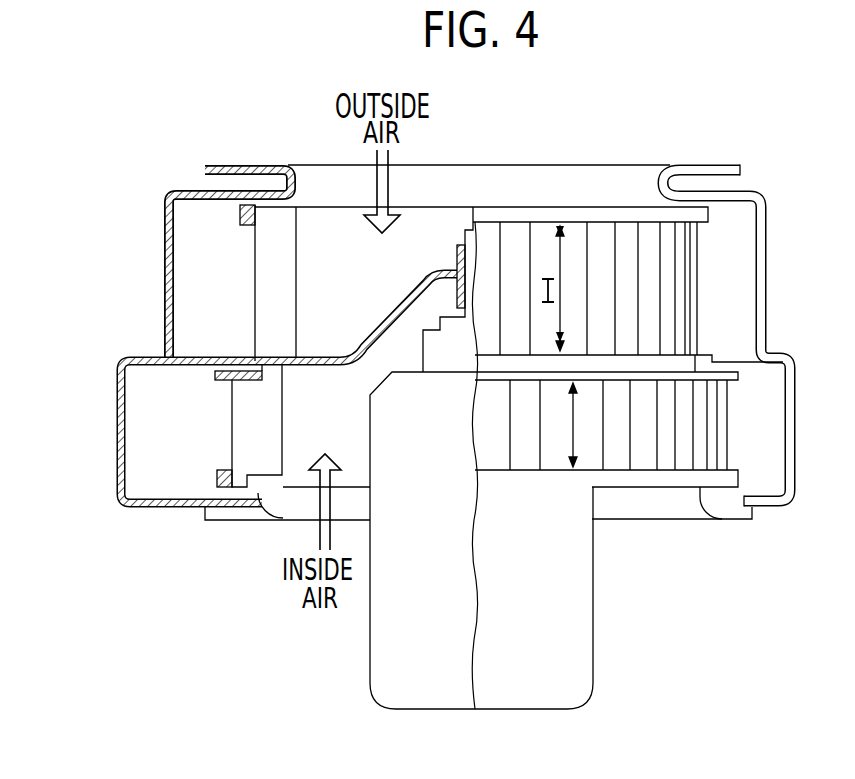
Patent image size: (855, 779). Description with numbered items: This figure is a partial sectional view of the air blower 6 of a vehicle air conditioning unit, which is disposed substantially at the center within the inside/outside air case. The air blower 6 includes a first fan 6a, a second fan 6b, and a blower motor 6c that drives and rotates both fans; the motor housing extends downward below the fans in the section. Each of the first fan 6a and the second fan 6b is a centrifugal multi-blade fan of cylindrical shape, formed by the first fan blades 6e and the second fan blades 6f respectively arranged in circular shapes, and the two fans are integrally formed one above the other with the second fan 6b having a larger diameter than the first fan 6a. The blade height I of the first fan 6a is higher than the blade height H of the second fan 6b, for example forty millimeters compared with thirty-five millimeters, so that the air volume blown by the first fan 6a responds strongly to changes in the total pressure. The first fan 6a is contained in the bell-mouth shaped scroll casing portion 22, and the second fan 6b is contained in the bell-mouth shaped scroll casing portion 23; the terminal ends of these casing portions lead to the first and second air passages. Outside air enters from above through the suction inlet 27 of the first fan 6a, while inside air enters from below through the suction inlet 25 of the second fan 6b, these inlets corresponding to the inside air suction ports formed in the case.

The air blower 6 is at (594, 640).
The first fan 6a is at (570, 207).
The second fan 6b is at (618, 495).
The blower motor 6c is at (399, 675).
The first fan blades 6e is at (255, 265).
The second fan blades 6f is at (240, 438).
The scroll casing portion 22 is at (165, 296).
The scroll casing portion 23 is at (117, 435).
The suction inlet 25 is at (290, 490).
The suction inlet 27 is at (447, 207).